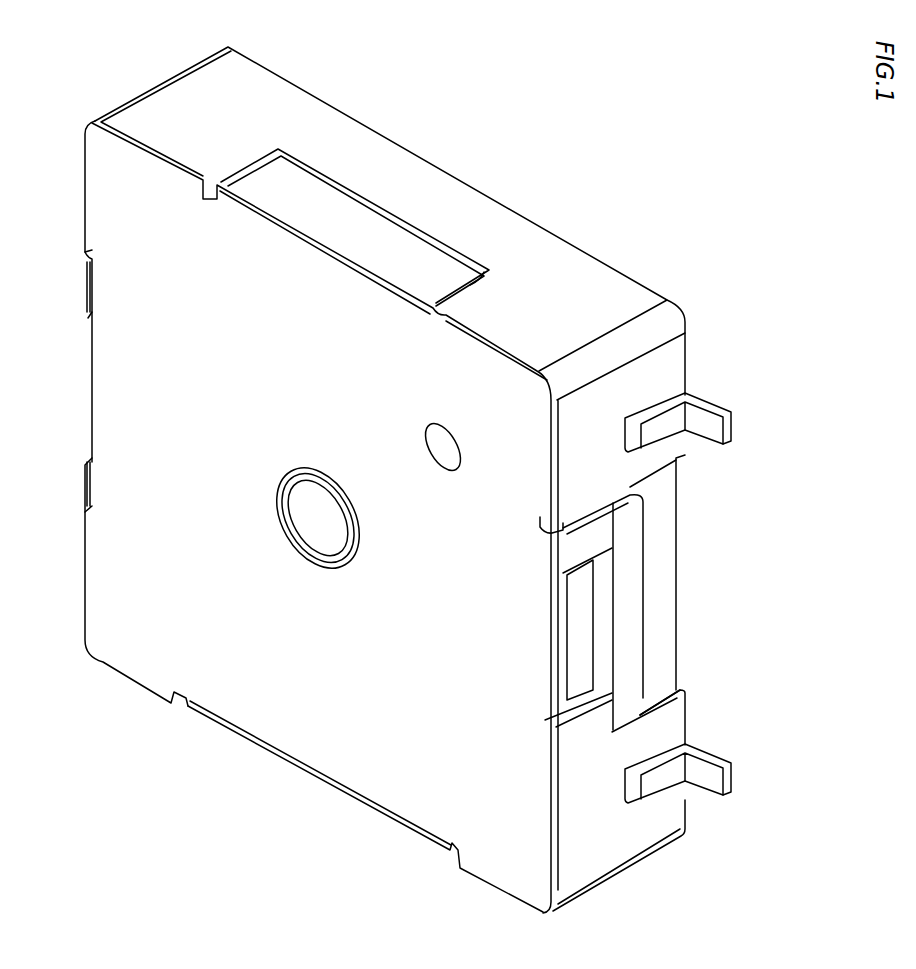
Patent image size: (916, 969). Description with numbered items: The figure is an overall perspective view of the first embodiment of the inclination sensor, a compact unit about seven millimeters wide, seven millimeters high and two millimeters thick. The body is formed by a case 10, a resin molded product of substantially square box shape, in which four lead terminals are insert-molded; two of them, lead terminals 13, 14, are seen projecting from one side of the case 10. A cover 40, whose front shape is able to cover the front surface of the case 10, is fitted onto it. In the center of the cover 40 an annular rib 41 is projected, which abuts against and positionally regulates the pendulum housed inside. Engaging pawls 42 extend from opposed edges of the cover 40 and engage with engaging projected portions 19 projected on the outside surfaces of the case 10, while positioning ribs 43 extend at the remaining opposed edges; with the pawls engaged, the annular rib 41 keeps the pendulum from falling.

The case 10 is at (615, 293).
The lead terminal 13 is at (710, 430).
The lead terminal 14 is at (710, 782).
The engaging projected portion 19 is at (593, 625).
The cover 40 is at (377, 767).
The annular rib 41 is at (293, 470).
The engaging pawl 42 is at (578, 552).
The positioning rib 43 is at (365, 230).